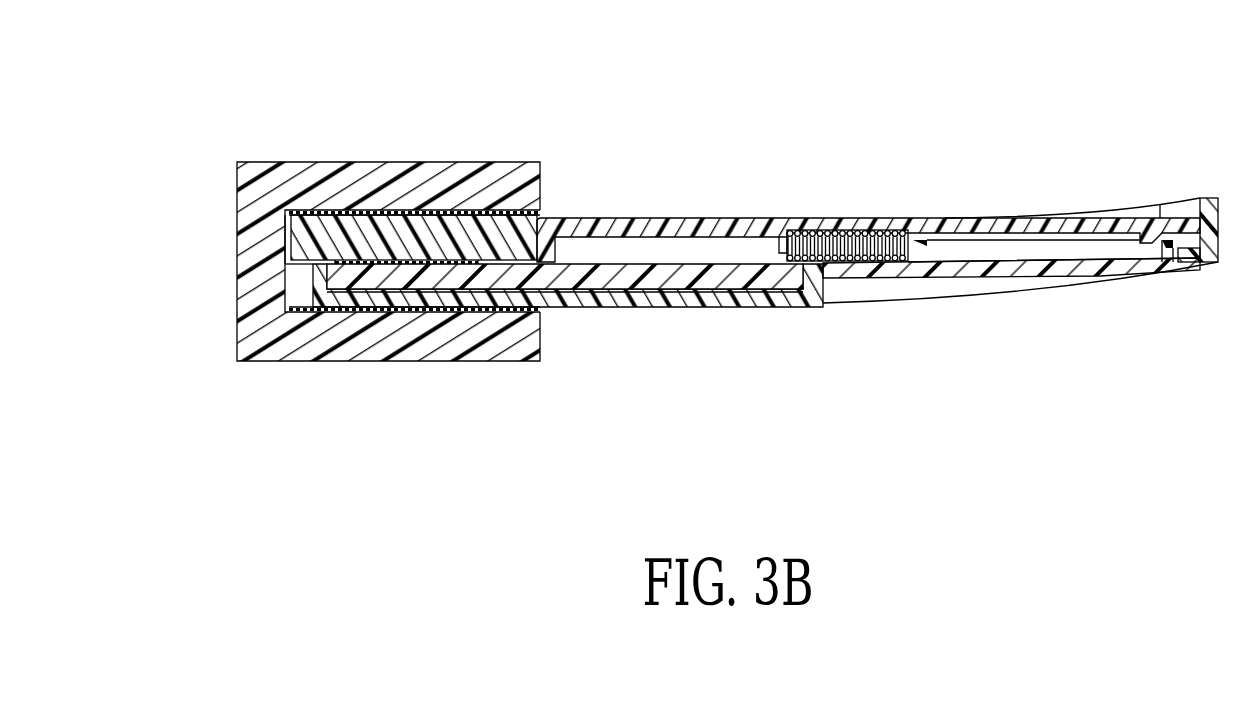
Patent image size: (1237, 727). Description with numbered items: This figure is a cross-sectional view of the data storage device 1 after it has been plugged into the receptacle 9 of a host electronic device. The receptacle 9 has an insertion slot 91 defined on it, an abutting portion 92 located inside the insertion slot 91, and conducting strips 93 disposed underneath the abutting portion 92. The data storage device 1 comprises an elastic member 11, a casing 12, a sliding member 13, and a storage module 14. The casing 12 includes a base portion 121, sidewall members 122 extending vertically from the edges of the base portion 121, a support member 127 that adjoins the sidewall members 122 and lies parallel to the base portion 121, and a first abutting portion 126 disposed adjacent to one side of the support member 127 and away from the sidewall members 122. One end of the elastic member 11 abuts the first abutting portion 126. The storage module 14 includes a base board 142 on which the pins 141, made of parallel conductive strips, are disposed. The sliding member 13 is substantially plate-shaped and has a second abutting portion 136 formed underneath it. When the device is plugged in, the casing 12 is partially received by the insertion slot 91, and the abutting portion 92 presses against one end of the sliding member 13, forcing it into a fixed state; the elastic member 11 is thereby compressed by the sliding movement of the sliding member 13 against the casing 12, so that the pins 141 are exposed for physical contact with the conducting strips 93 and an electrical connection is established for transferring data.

The data storage device 1 is at (1053, 178).
The receptacle 9 is at (262, 160).
The insertion slot 91 is at (300, 290).
The abutting portion 92 is at (299, 232).
The conducting strips 93 is at (430, 253).
The elastic member 11 is at (867, 229).
The casing 12 is at (685, 383).
The base portion 121 is at (698, 300).
The sidewall members 122 is at (1176, 236).
The first abutting portion 126 is at (945, 247).
The support member 127 is at (877, 270).
The sliding member 13 is at (650, 217).
The second abutting portion 136 is at (783, 243).
The storage module 14 is at (515, 425).
The pins 141 is at (385, 272).
The base board 142 is at (527, 274).